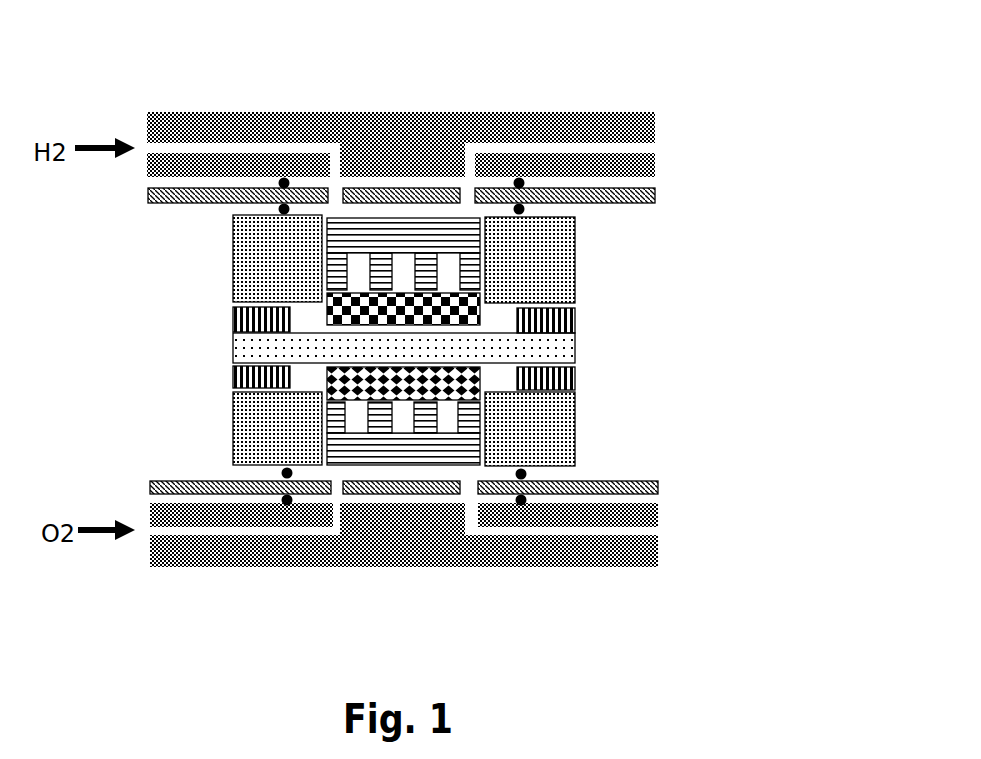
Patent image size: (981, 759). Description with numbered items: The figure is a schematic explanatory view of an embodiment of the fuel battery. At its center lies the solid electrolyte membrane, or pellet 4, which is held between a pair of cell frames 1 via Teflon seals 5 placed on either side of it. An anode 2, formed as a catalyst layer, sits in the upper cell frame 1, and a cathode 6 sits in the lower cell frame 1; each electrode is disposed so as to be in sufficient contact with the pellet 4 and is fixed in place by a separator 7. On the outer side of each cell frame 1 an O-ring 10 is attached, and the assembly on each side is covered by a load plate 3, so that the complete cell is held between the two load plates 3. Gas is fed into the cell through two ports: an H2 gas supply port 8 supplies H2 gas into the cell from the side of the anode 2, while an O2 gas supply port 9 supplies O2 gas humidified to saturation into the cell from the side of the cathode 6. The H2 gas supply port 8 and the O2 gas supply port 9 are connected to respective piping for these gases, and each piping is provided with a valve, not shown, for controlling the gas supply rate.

The cell frame 1 is at (262, 278).
The anode 2 is at (447, 300).
The load plate 3 is at (645, 197).
The pellet 4 is at (455, 345).
The Teflon seal 5 is at (262, 378).
The cathode 6 is at (477, 392).
The separator 7 is at (411, 235).
The H2 gas supply port 8 is at (147, 140).
The O2 gas supply port 9 is at (147, 527).
The O-ring 10 is at (518, 210).